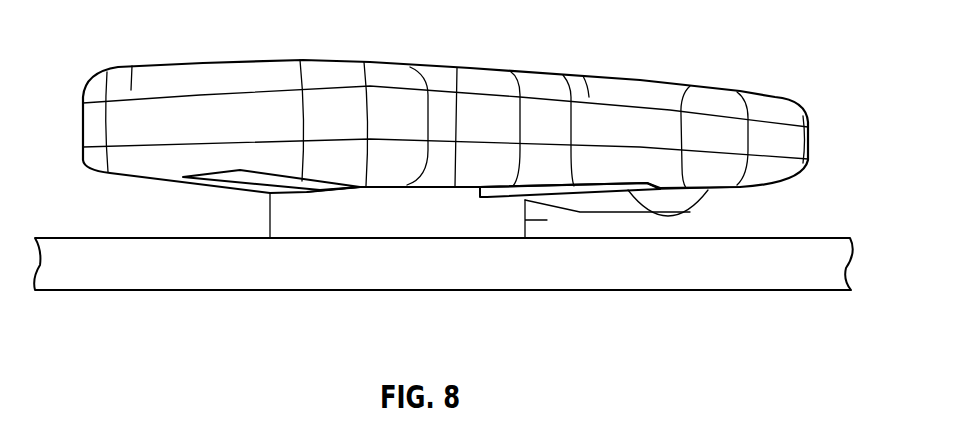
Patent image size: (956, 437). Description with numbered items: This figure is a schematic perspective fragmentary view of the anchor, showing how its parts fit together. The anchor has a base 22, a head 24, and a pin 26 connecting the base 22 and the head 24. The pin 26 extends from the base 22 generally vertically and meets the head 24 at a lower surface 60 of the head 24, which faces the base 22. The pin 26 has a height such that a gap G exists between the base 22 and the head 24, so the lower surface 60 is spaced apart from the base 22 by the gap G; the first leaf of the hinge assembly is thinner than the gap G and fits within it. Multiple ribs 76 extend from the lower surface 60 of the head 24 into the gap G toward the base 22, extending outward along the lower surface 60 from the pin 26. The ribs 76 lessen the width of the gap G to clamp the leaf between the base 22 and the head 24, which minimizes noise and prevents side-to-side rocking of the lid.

The base 22 is at (613, 275).
The head 24 is at (250, 64).
The pin 26 is at (270, 226).
The lower surface 60 is at (392, 188).
The ribs 76 is at (307, 193).
The gap G is at (757, 225).